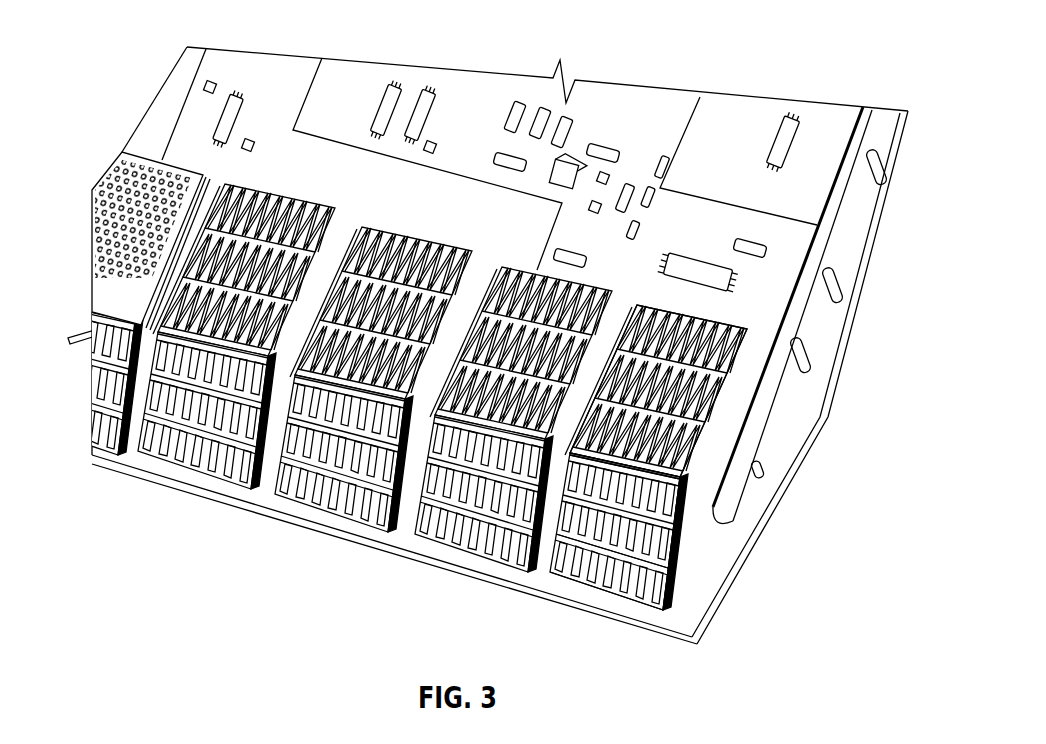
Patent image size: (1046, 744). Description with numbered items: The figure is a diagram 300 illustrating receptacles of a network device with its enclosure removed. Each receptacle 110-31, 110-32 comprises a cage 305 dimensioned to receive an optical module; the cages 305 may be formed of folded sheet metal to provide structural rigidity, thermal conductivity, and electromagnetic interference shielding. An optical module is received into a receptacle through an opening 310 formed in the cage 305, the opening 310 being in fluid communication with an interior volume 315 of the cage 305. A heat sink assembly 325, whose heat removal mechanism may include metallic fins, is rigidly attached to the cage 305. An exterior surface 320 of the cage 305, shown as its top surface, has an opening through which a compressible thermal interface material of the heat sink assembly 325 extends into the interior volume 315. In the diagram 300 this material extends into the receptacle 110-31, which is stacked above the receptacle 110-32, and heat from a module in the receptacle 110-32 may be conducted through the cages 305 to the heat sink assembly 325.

The diagram 300 is at (812, 35).
The cage 305 is at (760, 471).
The opening 310 is at (610, 525).
The interior volume 315 is at (623, 583).
The exterior surface 320 is at (653, 463).
The heat sink assembly 325 is at (676, 316).
The receptacle 110-31 is at (708, 503).
The receptacle 110-32 is at (694, 612).